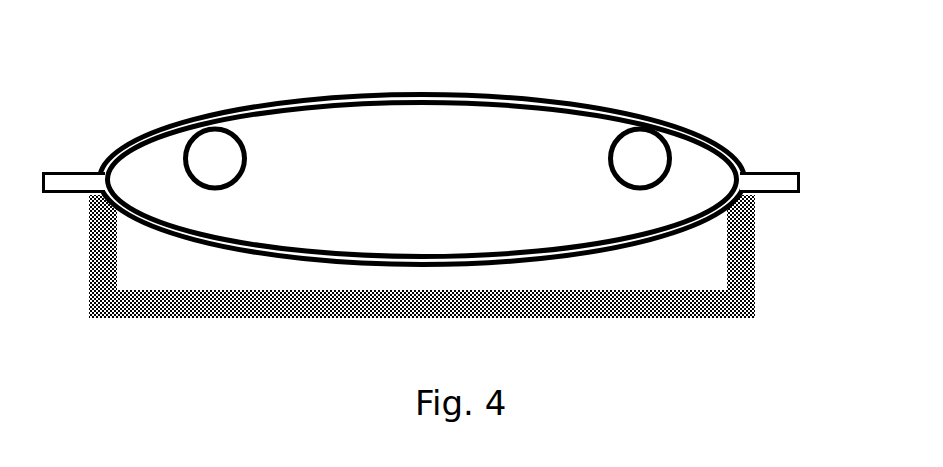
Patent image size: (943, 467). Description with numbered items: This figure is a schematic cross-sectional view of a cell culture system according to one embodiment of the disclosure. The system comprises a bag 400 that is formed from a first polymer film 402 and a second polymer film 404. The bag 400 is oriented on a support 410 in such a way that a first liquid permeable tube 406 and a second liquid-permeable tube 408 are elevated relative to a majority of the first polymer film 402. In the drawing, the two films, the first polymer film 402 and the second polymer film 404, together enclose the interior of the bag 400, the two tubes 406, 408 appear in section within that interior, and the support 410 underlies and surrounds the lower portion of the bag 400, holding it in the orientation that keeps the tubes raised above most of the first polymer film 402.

The bag 400 is at (421, 196).
The first polymer film 402 is at (633, 248).
The second polymer film 404 is at (407, 93).
The first liquid permeable tube 406 is at (212, 127).
The second liquid-permeable tube 408 is at (615, 135).
The support 410 is at (317, 307).